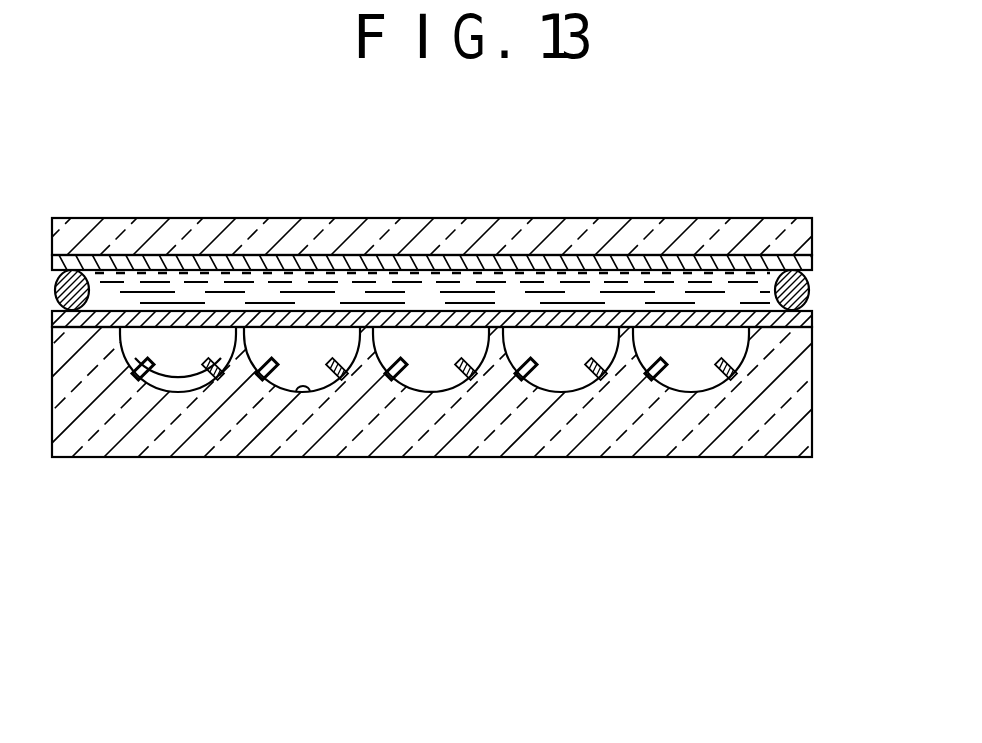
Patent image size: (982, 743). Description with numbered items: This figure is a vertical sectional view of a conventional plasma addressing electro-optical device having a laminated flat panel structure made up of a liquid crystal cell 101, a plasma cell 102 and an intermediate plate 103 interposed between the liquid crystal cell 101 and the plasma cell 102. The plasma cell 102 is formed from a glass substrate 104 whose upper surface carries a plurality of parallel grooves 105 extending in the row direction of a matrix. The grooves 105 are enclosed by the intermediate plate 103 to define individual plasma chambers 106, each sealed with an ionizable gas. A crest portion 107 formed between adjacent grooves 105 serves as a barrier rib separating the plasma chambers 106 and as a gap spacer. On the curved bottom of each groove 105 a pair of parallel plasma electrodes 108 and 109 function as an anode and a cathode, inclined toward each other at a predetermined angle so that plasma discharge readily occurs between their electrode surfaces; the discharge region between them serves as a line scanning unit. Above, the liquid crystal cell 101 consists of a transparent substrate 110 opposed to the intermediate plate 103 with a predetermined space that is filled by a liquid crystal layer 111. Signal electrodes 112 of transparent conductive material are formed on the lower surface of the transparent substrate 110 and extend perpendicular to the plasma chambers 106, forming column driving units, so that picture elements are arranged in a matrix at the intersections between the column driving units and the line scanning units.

The liquid crystal cell 101 is at (465, 339).
The plasma cell 102 is at (480, 429).
The intermediate plate 103 is at (697, 330).
The glass substrate 104 is at (238, 327).
The grooves 105 is at (303, 389).
The plasma chambers 106 is at (160, 368).
The crest portion 107 is at (622, 349).
The plasma electrode 108 is at (397, 374).
The plasma electrode 109 is at (463, 377).
The transparent substrate 110 is at (613, 236).
The liquid crystal layer 111 is at (242, 284).
The signal electrodes 112 is at (407, 258).